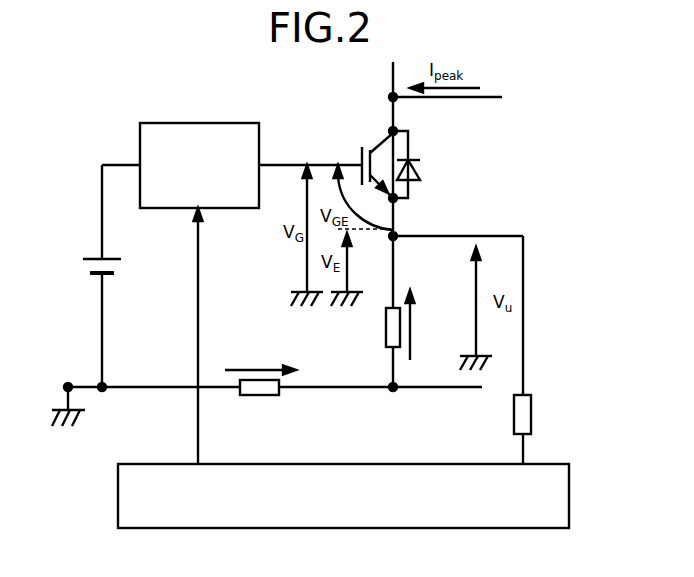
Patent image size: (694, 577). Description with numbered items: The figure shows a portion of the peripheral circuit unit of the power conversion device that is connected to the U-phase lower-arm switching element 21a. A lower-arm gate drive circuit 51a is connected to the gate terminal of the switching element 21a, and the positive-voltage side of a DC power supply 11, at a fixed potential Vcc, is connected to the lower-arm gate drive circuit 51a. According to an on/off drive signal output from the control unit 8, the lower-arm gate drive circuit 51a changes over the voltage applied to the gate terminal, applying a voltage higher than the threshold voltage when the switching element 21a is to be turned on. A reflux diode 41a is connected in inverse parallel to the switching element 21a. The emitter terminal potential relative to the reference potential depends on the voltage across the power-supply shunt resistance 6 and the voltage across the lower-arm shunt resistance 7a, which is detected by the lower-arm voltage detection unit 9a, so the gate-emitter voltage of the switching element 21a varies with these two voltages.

The lower-arm gate drive circuit 51a is at (205, 123).
The DC power supply 11 is at (90, 258).
The switching element 21a is at (363, 146).
The reflux diode 41a is at (421, 165).
The lower-arm shunt resistance 7a is at (397, 306).
The power-supply shunt resistance 6 is at (280, 393).
The lower-arm voltage detection unit 9a is at (532, 410).
The control unit 8 is at (570, 495).